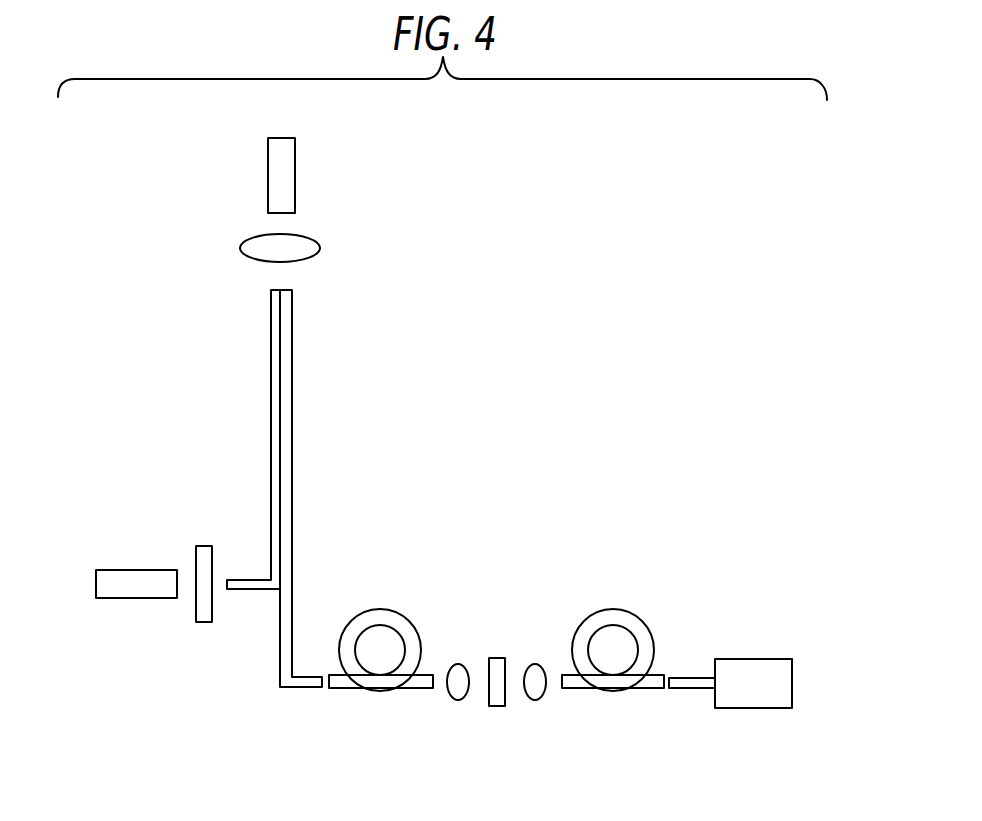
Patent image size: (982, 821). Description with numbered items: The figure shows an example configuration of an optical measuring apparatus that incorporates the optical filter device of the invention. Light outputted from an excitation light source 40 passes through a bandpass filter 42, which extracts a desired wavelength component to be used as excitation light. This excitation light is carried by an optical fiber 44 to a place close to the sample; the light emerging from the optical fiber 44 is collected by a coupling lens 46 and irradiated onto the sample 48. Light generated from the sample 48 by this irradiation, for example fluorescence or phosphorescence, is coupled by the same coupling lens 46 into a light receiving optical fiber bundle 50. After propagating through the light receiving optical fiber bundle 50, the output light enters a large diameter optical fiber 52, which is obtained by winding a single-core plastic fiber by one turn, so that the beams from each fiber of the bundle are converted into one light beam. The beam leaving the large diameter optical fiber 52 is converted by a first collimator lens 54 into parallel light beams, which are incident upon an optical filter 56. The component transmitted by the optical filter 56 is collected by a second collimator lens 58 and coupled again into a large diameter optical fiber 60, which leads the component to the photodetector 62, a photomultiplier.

The excitation light source 40 is at (135, 598).
The bandpass filter 42 is at (205, 622).
The optical fiber 44 is at (276, 394).
The coupling lens 46 is at (317, 248).
The sample 48 is at (291, 178).
The light receiving optical fiber bundle 50 is at (286, 467).
The large diameter optical fiber 52 is at (380, 620).
The first collimator lens 54 is at (458, 700).
The optical filter 56 is at (498, 658).
The second collimator lens 58 is at (535, 700).
The large diameter optical fiber 60 is at (614, 620).
The photodetector 62 is at (752, 708).